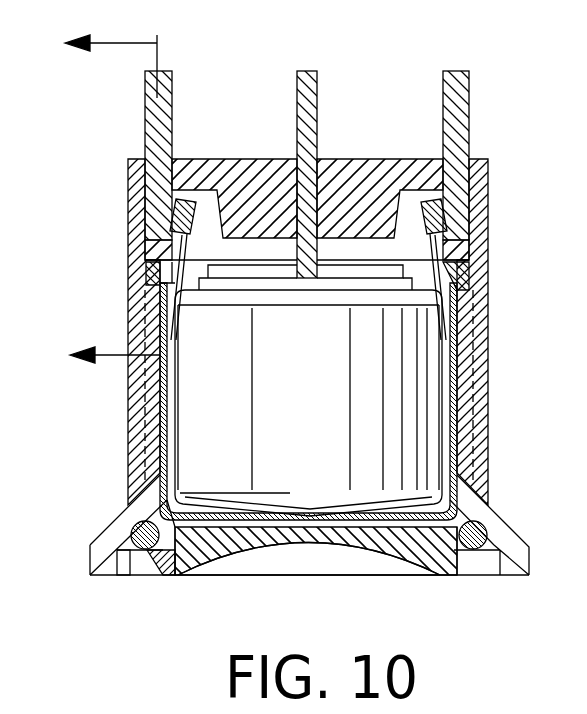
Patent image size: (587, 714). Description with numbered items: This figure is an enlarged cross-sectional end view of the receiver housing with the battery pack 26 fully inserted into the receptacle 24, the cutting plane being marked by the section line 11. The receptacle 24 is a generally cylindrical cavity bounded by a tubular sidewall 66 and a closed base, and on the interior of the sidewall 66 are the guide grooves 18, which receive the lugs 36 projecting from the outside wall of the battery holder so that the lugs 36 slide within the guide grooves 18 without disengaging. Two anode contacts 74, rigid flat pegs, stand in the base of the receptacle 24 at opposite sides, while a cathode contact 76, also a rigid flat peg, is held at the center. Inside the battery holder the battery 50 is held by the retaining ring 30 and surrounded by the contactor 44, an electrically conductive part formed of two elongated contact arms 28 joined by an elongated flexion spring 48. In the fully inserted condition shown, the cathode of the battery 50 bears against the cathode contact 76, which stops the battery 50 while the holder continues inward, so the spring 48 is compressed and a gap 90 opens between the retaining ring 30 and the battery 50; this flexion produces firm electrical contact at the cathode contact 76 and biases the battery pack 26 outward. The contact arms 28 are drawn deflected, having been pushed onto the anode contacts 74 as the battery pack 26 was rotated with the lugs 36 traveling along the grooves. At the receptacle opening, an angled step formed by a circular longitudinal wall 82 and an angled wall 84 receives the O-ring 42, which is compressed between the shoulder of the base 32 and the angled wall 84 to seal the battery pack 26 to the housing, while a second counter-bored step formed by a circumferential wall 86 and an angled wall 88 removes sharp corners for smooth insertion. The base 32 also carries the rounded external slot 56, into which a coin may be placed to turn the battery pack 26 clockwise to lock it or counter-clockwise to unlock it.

The section line 11 is at (112, 201).
The guide grooves 18 is at (158, 433).
The receptacle 24 is at (125, 187).
The battery pack 26 is at (433, 573).
The contact arms 28 is at (176, 214).
The retaining ring 30 is at (217, 187).
The base 32 is at (472, 568).
The lugs 36 is at (158, 278).
The O-ring 42 is at (500, 527).
The contactor 44 is at (443, 368).
The flexion spring 48 is at (305, 512).
The battery 50 is at (420, 320).
The external slot 56 is at (300, 542).
The tubular sidewall 66 is at (490, 172).
The anode contacts 74 is at (168, 71).
The cathode contact 76 is at (305, 71).
The longitudinal wall 82 is at (126, 578).
The angled wall 84 is at (141, 560).
The circumferential wall 86 is at (178, 566).
The angled wall 88 is at (222, 560).
The gap 90 is at (416, 277).